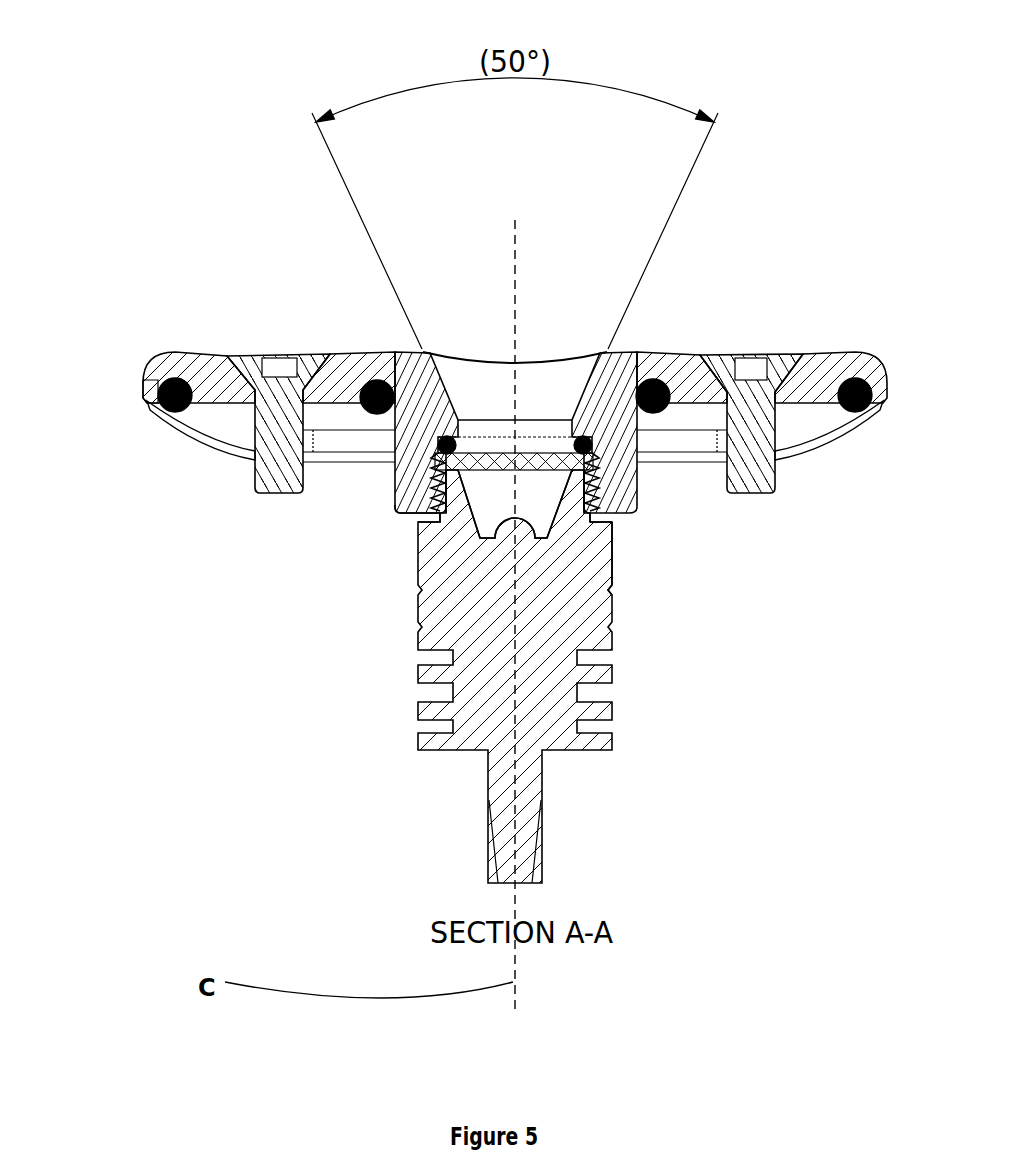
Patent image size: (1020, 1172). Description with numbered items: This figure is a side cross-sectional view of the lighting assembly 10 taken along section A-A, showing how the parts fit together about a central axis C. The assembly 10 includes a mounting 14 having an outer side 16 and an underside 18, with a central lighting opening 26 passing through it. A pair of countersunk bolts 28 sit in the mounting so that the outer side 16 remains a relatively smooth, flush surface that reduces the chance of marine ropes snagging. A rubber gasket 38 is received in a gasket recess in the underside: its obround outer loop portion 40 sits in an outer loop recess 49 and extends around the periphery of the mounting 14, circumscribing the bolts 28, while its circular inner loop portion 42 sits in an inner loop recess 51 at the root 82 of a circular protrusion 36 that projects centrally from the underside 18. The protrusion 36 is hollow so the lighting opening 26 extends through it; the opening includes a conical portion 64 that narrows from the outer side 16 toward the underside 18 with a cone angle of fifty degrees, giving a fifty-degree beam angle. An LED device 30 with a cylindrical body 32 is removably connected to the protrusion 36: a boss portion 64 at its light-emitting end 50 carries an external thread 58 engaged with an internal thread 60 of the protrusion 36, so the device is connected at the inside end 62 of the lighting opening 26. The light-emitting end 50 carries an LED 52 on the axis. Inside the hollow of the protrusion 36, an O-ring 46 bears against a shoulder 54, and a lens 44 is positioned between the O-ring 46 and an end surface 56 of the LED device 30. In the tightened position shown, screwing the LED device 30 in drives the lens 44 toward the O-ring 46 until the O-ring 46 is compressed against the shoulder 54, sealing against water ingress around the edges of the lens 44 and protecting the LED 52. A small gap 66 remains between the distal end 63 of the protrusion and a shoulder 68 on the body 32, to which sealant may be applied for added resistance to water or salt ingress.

The lighting assembly 10 is at (462, 451).
The mounting 14 is at (182, 312).
The outer side 16 is at (462, 373).
The underside 18 is at (130, 465).
The lighting opening 26 is at (515, 273).
The countersunk bolts 28 is at (513, 384).
The LED device 30 is at (553, 630).
The cylindrical body 32 is at (568, 676).
The circular protrusion 36 is at (368, 552).
The rubber gasket 38 is at (847, 491).
The outer loop portion 40 is at (482, 427).
The inner loop portion 42 is at (513, 384).
The lens 44 is at (529, 455).
The O-ring 46 is at (429, 499).
The outer loop recess 49 is at (102, 358).
The light-emitting end 50 is at (515, 458).
The inner loop recess 51 is at (349, 331).
The LED 52 is at (646, 583).
The shoulder 54 is at (506, 356).
The end surface 56 is at (514, 343).
The external thread 58 is at (389, 573).
The internal thread 60 is at (515, 329).
The inside end 62 is at (695, 608).
The distal end 63 is at (698, 539).
The boss portion 64 is at (488, 398).
The gap 66 is at (696, 559).
The shoulder 68 is at (736, 585).
The root 82 is at (499, 364).